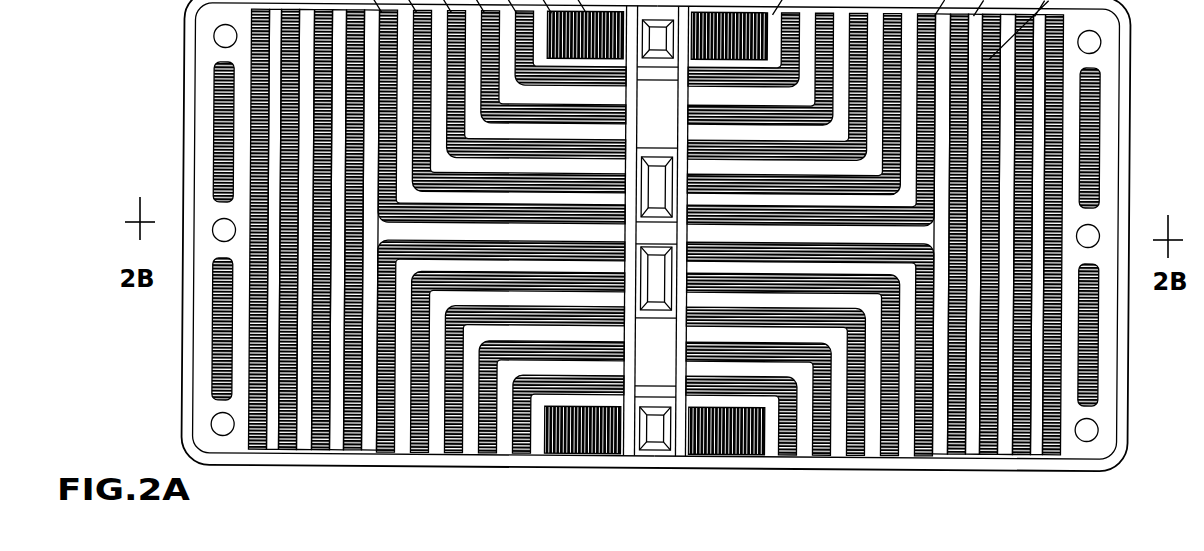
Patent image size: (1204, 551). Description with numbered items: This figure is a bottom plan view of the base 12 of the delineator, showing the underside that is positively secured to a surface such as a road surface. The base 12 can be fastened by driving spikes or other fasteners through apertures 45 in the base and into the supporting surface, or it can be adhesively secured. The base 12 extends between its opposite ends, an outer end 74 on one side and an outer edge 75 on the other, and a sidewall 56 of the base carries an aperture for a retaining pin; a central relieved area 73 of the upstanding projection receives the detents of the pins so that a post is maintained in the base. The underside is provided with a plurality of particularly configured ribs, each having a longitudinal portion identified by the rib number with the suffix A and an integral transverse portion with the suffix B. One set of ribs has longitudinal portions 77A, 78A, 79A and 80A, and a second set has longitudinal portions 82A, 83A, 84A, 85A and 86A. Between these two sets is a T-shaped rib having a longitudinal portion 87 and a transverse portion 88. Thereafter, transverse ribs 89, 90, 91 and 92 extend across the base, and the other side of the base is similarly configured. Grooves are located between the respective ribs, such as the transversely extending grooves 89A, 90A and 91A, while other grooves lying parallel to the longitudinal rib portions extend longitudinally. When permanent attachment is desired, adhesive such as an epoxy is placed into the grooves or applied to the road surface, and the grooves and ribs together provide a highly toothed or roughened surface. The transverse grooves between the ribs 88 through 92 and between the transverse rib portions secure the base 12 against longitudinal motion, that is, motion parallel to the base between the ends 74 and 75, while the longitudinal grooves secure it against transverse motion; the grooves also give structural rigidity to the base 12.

The base 12 is at (1152, 108).
The apertures 45 is at (222, 38).
The sidewall 56 is at (668, 464).
The central relieved area 73 is at (656, 231).
The end of the base 74 is at (126, 335).
The outer edge of the base 75 is at (1128, 322).
The longitudinal portion of rib 77A is at (703, 102).
The longitudinal portion of rib 78A is at (703, 131).
The longitudinal portion of rib 79A is at (656, 102).
The longitudinal portion of rib 80A is at (656, 118).
The longitudinal portion of rib 82A is at (588, 402).
The longitudinal portion of rib 83A is at (606, 366).
The longitudinal portion of rib 84A is at (612, 333).
The longitudinal portion of rib 85A is at (775, 376).
The longitudinal portion of rib 86A is at (654, 359).
The longitudinal portion of T-shaped rib 87 is at (654, 341).
The transverse portion of T-shaped rib 88 is at (940, 450).
The transverse rib 89 is at (338, 450).
The groove 89A is at (352, 420).
The transverse rib 90 is at (305, 452).
The groove 90A is at (320, 270).
The transverse rib 91 is at (273, 450).
The groove 91A is at (288, 320).
The transverse rib 92 is at (238, 150).